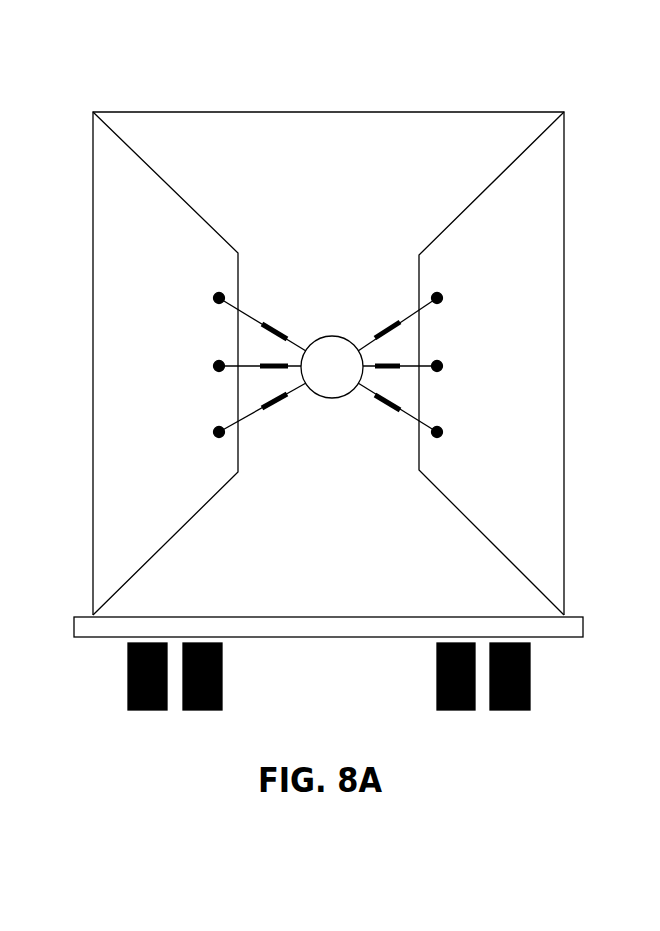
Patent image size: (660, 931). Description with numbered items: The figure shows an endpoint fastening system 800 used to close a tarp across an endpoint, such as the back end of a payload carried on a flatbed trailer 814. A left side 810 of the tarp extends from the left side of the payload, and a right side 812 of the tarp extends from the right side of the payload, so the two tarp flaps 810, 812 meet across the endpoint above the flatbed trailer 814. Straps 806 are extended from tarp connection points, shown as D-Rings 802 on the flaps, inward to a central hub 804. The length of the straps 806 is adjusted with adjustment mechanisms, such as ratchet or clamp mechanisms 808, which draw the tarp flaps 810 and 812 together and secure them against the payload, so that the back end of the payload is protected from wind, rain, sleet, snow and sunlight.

The endpoint fastening system 800 is at (436, 83).
The D-Rings 802 is at (214, 295).
The central hub 804 is at (330, 337).
The straps 806 is at (252, 313).
The ratchet or clamp mechanisms 808 is at (268, 316).
The left side of a tarp 810 is at (100, 217).
The right side of a tarp 812 is at (547, 202).
The flatbed trailer 814 is at (577, 630).